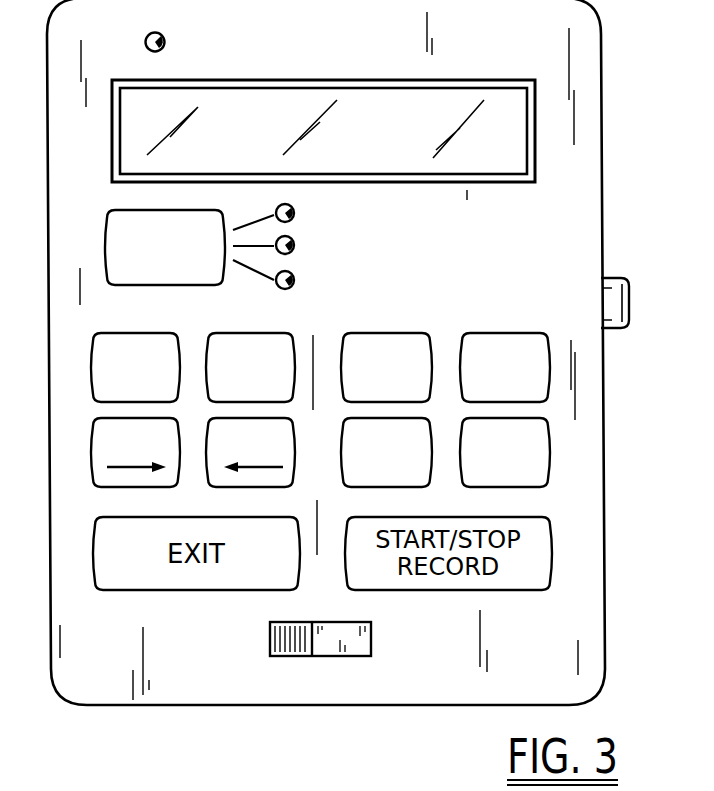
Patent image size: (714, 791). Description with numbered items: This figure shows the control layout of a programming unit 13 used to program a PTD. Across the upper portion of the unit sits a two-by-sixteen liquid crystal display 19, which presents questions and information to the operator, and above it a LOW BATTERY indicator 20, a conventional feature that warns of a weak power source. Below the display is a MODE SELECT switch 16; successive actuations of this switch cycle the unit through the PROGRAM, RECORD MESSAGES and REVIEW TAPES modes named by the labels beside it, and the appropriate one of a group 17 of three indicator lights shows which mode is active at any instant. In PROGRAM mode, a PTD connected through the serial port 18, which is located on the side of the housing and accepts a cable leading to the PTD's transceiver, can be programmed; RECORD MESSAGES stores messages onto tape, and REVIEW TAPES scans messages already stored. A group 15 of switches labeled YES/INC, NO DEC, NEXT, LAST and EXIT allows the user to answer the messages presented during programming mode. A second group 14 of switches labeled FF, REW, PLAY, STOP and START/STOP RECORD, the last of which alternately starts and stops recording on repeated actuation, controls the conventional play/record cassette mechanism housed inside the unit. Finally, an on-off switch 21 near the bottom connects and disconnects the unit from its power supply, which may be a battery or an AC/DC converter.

The programming unit 13 is at (91, 200).
The group of five switches 14 is at (457, 417).
The group of switches 15 is at (205, 417).
The MODE SELECT switch 16 is at (162, 287).
The group of three indicator lights 17 is at (254, 250).
The serial port 18 is at (631, 311).
The liquid crystal display 19 is at (406, 136).
The LOW BATTERY indicator 20 is at (146, 35).
The on-off switch 21 is at (297, 622).